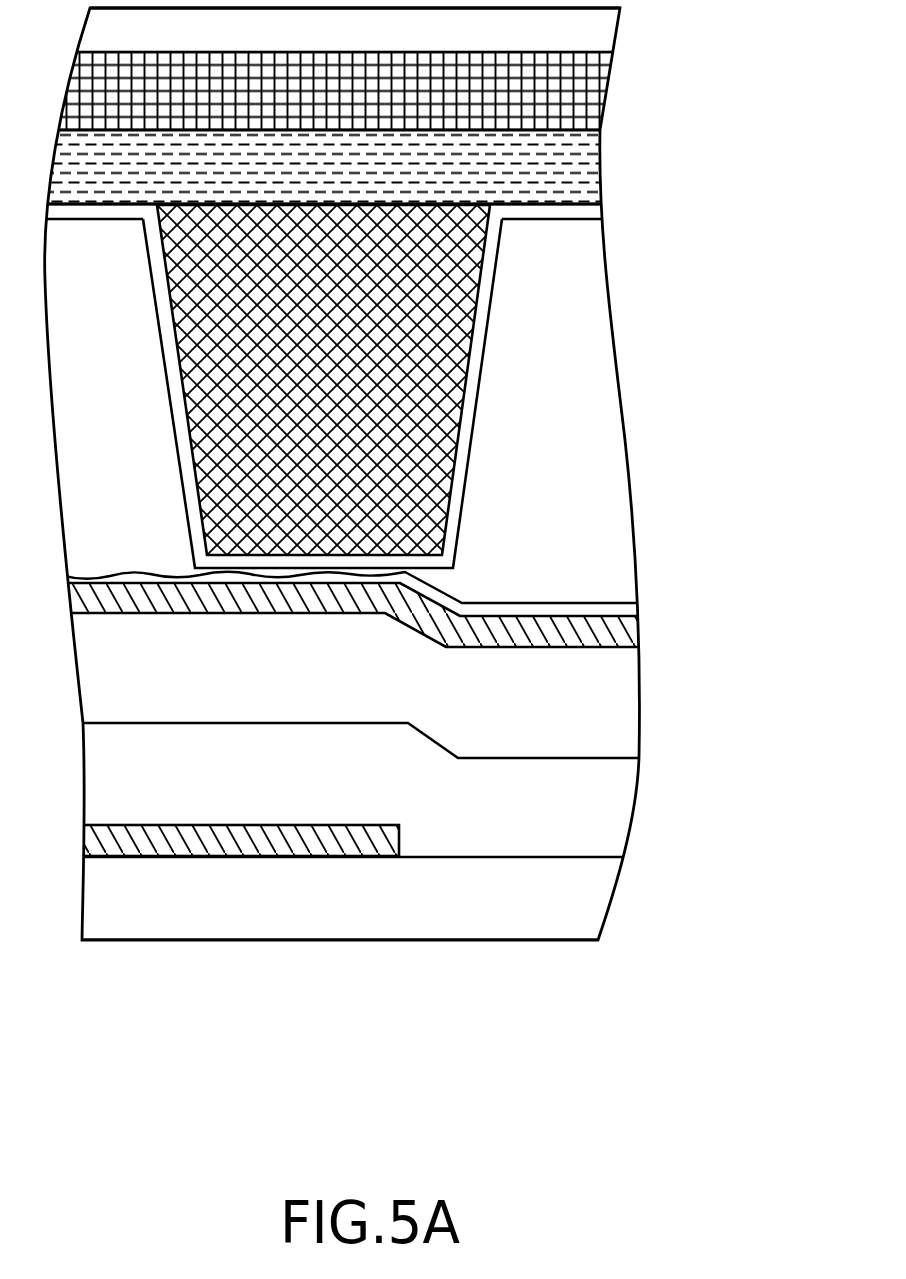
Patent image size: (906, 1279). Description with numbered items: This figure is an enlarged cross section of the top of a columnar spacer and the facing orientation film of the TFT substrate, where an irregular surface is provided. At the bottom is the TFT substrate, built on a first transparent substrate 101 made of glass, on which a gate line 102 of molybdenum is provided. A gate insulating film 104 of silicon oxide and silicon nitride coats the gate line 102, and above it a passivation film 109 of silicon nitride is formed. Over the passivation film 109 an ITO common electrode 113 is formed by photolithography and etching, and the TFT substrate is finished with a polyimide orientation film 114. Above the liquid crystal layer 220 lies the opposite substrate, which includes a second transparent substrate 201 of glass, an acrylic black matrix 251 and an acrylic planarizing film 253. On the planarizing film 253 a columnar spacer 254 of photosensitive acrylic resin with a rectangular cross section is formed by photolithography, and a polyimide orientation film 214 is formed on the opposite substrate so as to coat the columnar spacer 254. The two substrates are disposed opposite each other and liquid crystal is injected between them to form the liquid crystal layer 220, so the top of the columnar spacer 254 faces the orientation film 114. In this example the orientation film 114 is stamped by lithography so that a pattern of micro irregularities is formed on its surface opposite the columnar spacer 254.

The second transparent substrate 201 is at (598, 35).
The black matrix 251 is at (597, 97).
The planarizing film 253 is at (600, 167).
The orientation film 214 is at (493, 302).
The columnar spacer 254 is at (447, 380).
The liquid crystal layer 220 is at (592, 478).
The orientation film 114 is at (640, 608).
The common electrode 113 is at (640, 637).
The passivation film 109 is at (630, 690).
The gate insulating film 104 is at (617, 807).
The first transparent substrate 101 is at (600, 905).
The gate line 102 is at (263, 850).